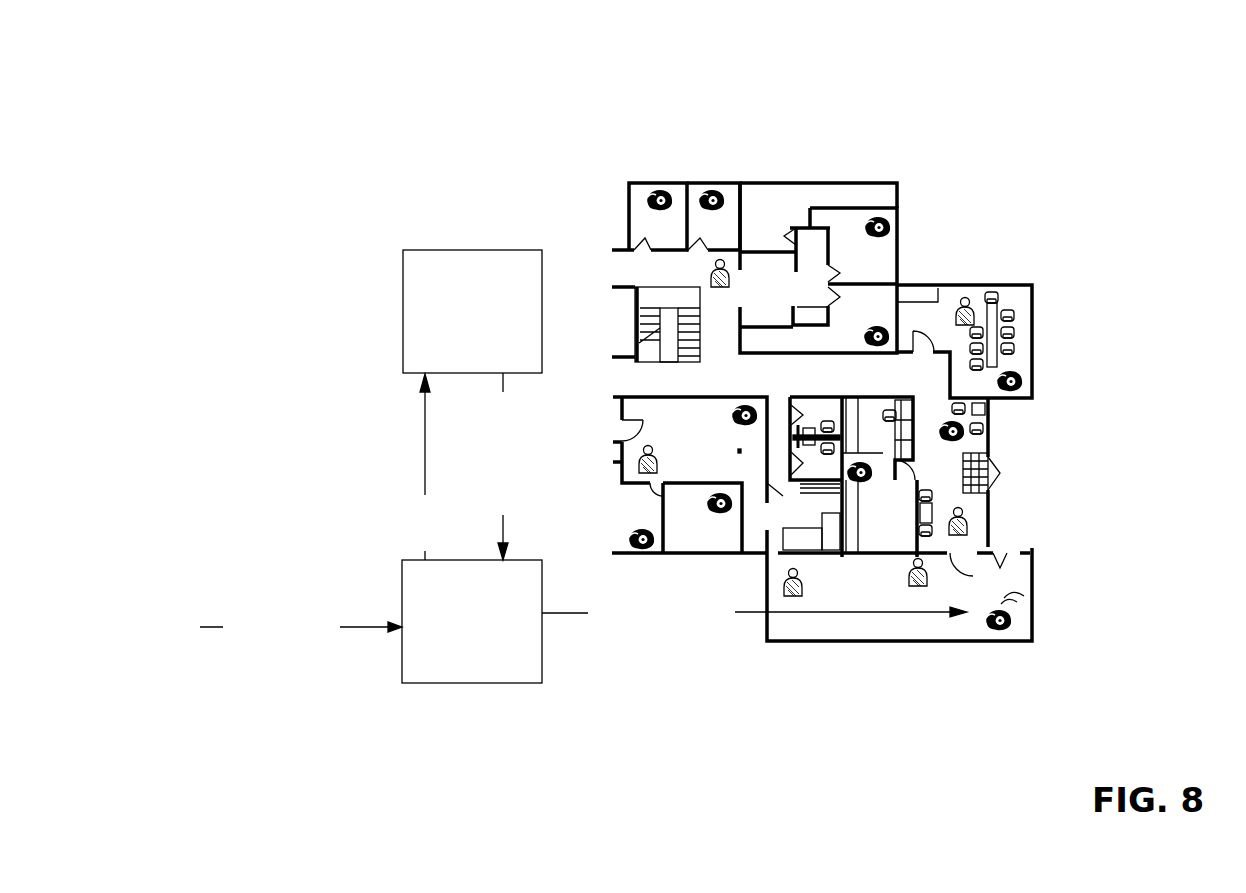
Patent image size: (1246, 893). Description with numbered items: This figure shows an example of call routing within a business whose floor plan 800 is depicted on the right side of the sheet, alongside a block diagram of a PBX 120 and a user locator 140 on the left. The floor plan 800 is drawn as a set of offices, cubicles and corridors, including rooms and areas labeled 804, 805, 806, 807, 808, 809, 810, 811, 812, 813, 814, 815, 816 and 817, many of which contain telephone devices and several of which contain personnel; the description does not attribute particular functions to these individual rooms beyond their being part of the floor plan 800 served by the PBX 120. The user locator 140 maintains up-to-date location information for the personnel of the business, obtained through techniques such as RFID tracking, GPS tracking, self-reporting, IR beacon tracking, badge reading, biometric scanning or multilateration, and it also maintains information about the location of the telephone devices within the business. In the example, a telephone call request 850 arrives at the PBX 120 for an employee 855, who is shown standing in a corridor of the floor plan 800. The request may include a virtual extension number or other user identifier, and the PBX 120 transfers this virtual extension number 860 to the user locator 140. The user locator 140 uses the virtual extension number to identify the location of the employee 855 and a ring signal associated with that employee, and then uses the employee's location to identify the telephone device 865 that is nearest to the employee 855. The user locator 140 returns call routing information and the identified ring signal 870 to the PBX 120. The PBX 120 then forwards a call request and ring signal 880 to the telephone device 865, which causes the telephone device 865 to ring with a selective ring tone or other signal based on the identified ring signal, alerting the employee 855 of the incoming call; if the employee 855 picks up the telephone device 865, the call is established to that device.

The floor plan 800 is at (279, 49).
The office room with telephone 804 is at (658, 216).
The office room with telephone 805 is at (713, 216).
The office room 806 is at (818, 227).
The office room / hallway 807 is at (769, 307).
The office room with telephone 808 is at (843, 246).
The office room with telephone 809 is at (845, 318).
The conference room with telephone 810 is at (964, 341).
The office area with telephone 811 is at (904, 486).
The corridor area 812 is at (821, 584).
The telephone in cubicle area 813 is at (870, 484).
The cubicle workstation area 814 is at (852, 467).
The office area 815 is at (803, 516).
The office room with telephone 816 is at (689, 518).
The telephone location 817 is at (629, 529).
The employee 855 is at (933, 580).
The telephone device 865 is at (1012, 627).
The user locator 140 is at (488, 346).
The PBX 120 is at (488, 645).
The telephone call request 850 is at (301, 627).
The virtual extension number 860 is at (425, 467).
The information for routing the call 870 is at (507, 466).
The call request 880 is at (754, 625).